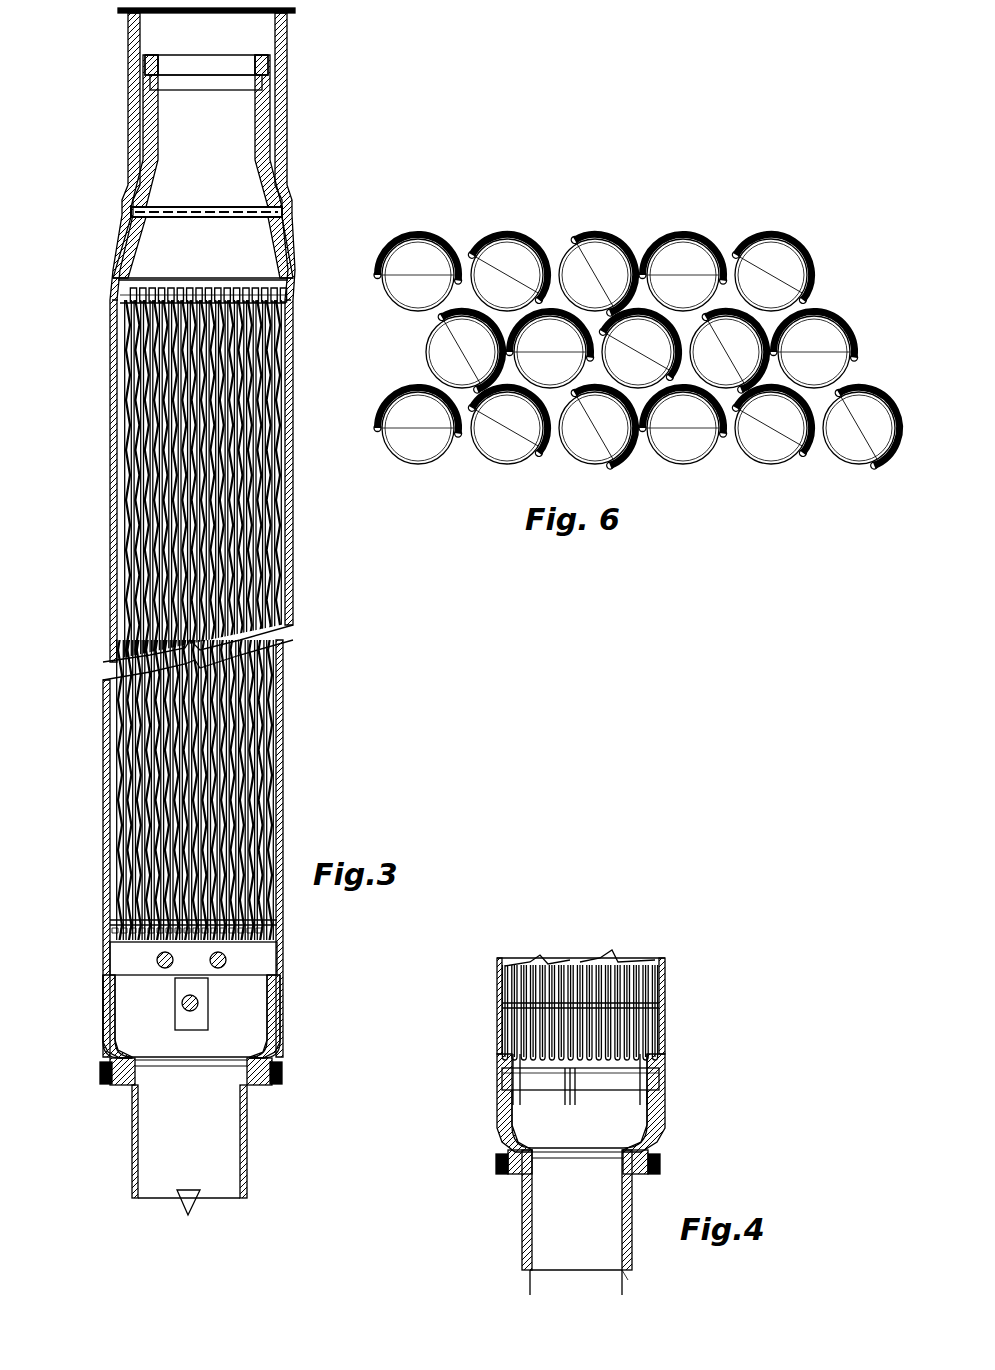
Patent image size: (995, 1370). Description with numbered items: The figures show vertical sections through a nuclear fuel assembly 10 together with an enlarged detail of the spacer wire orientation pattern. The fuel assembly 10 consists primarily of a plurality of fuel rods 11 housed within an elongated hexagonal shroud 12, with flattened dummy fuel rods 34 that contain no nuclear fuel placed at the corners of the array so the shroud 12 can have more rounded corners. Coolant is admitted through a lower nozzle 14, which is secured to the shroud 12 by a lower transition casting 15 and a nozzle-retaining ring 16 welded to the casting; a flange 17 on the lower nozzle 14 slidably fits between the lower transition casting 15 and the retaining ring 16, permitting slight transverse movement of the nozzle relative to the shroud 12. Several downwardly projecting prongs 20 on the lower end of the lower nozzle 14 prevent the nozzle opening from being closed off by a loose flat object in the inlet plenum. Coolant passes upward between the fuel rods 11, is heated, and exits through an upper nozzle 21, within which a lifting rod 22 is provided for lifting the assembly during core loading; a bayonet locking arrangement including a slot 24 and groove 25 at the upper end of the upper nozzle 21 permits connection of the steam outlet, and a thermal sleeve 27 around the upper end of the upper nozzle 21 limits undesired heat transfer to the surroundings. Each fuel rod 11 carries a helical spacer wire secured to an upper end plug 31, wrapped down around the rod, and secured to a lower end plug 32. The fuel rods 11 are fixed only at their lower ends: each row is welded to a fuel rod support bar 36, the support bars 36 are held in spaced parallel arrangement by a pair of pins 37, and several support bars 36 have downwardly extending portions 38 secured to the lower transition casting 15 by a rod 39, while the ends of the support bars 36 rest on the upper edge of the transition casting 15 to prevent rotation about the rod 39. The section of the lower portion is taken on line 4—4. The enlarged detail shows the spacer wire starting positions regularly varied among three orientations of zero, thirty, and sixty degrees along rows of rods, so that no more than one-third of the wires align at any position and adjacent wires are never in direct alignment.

In FIG. 3, the section line 4— 4 is at (196, 867).
In FIG. 3, the nuclear fuel assembly 10 is at (90, 532).
In FIG. 6, the nuclear fuel assembly 10 is at (856, 354).
In FIG. 3, the fuel rods 11 is at (270, 710).
In FIG. 4, the fuel rods 11 is at (581, 966).
In FIG. 3, the shroud 12 is at (292, 422).
In FIG. 6, the shroud 12 is at (747, 238).
In FIG. 4, the shroud 12 is at (665, 982).
In FIG. 3, the lower nozzle 14 is at (247, 1155).
In FIG. 4, the lower nozzle 14 is at (524, 1222).
In FIG. 3, the lower transition casting 15 is at (280, 1040).
In FIG. 4, the lower transition casting 15 is at (500, 1128).
In FIG. 3, the nozzle-retaining ring 16 is at (268, 1086).
In FIG. 4, the nozzle-retaining ring 16 is at (650, 1172).
In FIG. 3, the flange 17 is at (275, 1069).
In FIG. 4, the flange 17 is at (662, 1160).
In FIG. 3, the prongs 20 is at (192, 1210).
In FIG. 4, the prongs 20 is at (625, 1285).
In FIG. 3, the upper nozzle 21 is at (270, 128).
In FIG. 3, the lifting rod 22 is at (176, 207).
In FIG. 3, the slot 24 is at (160, 62).
In FIG. 3, the groove 25 is at (196, 75).
In FIG. 3, the thermal sleeve 27 is at (285, 42).
In FIG. 3, the upper end plug 31 is at (172, 290).
In FIG. 3, the lower end plug 32 is at (110, 925).
In FIG. 4, the lower end plug 32 is at (497, 1003).
In FIG. 3, the dummy fuel rods 34 is at (110, 306).
In FIG. 4, the fuel rod support bar 36 is at (570, 1106).
In FIG. 3, the pins 37 is at (226, 960).
In FIG. 4, the pins 37 is at (665, 1035).
In FIG. 3, the downwardly extending portions 38 is at (209, 992).
In FIG. 4, the downwardly extending portions 38 is at (640, 1110).
In FIG. 3, the rod 39 is at (198, 1006).
In FIG. 4, the rod 39 is at (525, 1105).